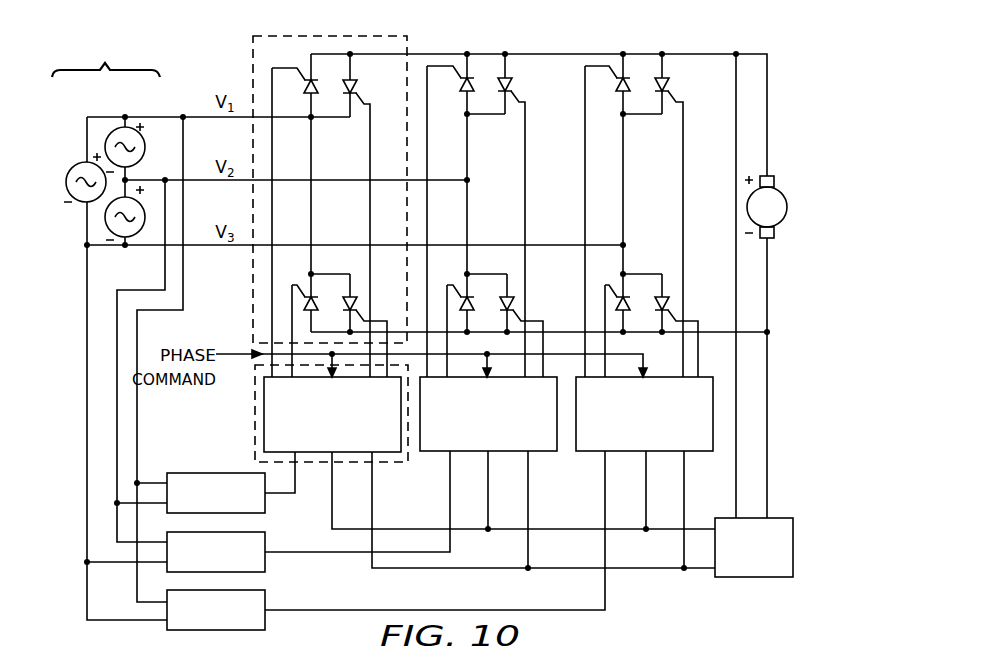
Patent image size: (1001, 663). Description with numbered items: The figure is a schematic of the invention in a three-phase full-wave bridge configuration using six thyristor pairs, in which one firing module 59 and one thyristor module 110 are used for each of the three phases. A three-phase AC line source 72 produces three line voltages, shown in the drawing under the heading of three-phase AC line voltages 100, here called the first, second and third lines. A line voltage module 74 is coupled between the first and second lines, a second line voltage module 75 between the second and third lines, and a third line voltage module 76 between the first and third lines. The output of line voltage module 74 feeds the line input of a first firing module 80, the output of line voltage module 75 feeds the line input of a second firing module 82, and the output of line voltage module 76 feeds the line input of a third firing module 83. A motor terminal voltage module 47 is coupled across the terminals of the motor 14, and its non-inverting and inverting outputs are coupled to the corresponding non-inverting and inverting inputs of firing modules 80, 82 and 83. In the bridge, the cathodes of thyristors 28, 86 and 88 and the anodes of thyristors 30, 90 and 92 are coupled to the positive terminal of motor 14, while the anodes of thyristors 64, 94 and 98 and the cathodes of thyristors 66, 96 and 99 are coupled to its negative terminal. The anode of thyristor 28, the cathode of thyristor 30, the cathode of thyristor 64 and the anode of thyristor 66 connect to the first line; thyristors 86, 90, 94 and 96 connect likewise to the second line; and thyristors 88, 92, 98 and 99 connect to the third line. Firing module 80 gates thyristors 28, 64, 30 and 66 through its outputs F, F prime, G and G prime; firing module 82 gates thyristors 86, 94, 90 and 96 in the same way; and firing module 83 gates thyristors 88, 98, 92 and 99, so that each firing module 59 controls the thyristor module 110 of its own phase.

The motor 14 is at (776, 222).
The thyristor 28 is at (314, 97).
The thyristor 30 is at (359, 88).
The motor terminal voltage module 47 is at (781, 555).
The firing module 59 is at (255, 422).
The thyristor 64 is at (318, 296).
The thyristor 66 is at (358, 301).
The three-phase AC line source 72 is at (61, 226).
The line voltage module 74 is at (203, 505).
The second line voltage module 75 is at (203, 564).
The third line voltage module 76 is at (203, 622).
The first firing module 80 is at (345, 423).
The second firing module 82 is at (501, 423).
The third firing module 83 is at (658, 423).
The thyristor 86 is at (464, 72).
The thyristor 88 is at (620, 72).
The thyristor 90 is at (508, 72).
The thyristor 92 is at (665, 72).
The thyristor 94 is at (473, 296).
The thyristor 96 is at (516, 301).
The thyristor 98 is at (617, 297).
The thyristor 99 is at (668, 294).
The three-phase AC line voltages 100 is at (80, 108).
The thyristor module 110 is at (249, 60).